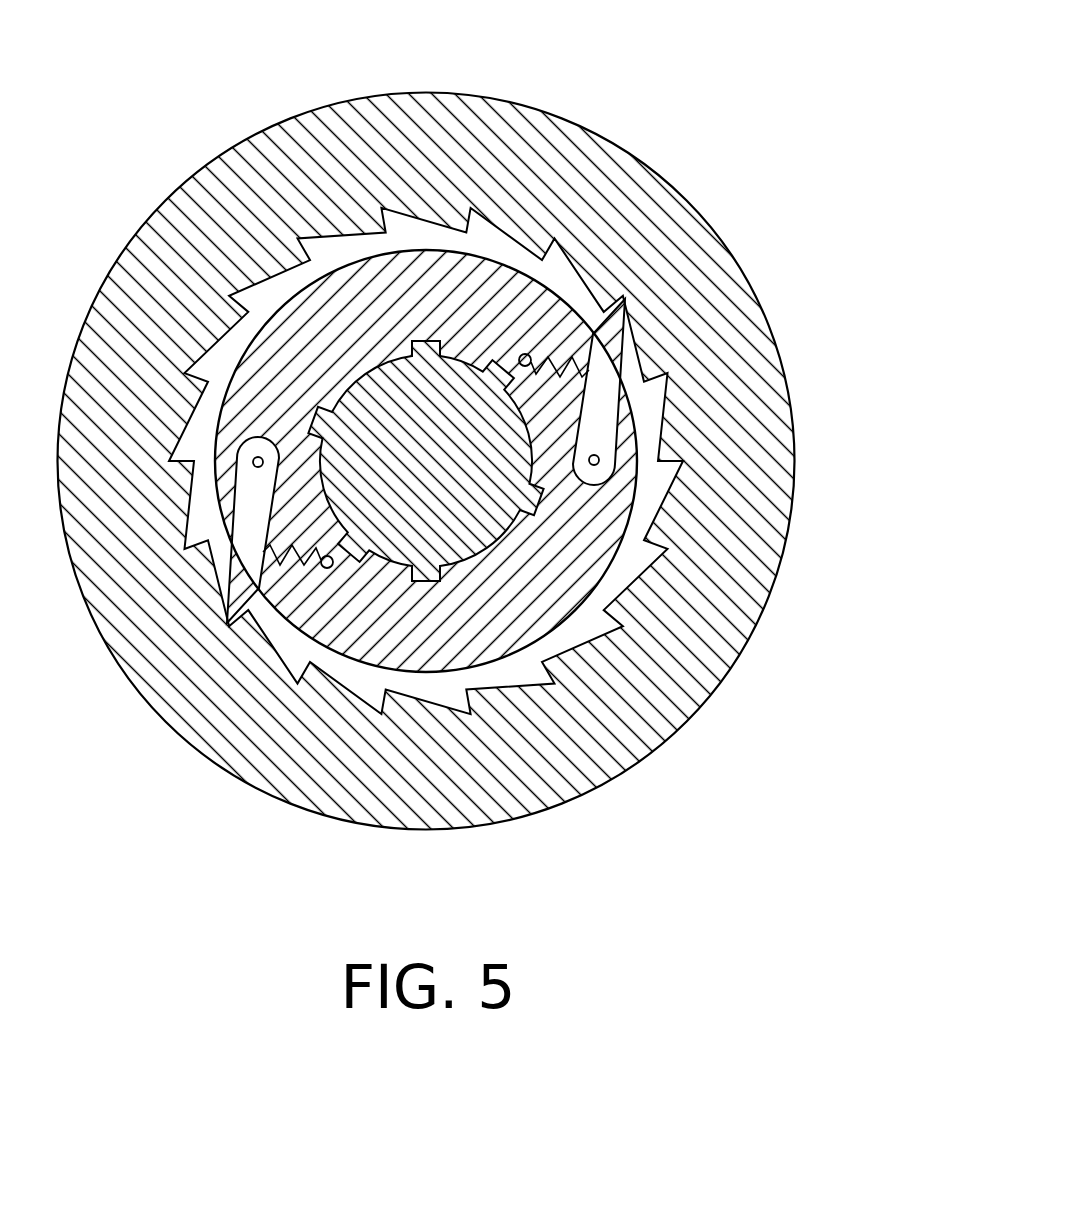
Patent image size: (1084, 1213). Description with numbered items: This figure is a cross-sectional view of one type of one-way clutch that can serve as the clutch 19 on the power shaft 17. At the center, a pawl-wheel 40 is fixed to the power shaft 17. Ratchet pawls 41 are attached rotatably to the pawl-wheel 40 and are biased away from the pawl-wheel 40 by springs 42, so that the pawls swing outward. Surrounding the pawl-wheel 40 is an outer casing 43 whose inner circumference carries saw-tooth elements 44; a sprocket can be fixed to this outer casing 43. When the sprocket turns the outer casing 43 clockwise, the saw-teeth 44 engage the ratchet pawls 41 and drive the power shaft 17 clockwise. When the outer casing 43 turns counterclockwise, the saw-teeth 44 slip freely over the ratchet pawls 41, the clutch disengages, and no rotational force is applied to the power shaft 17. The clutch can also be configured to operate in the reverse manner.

The power shaft 17 is at (458, 395).
The clutch 19 is at (509, 444).
The pawl-wheel 40 is at (558, 612).
The ratchet pawls 41 is at (610, 382).
The springs 42 is at (558, 355).
The outer casing 43 is at (722, 630).
The saw-tooth elements 44 is at (323, 240).